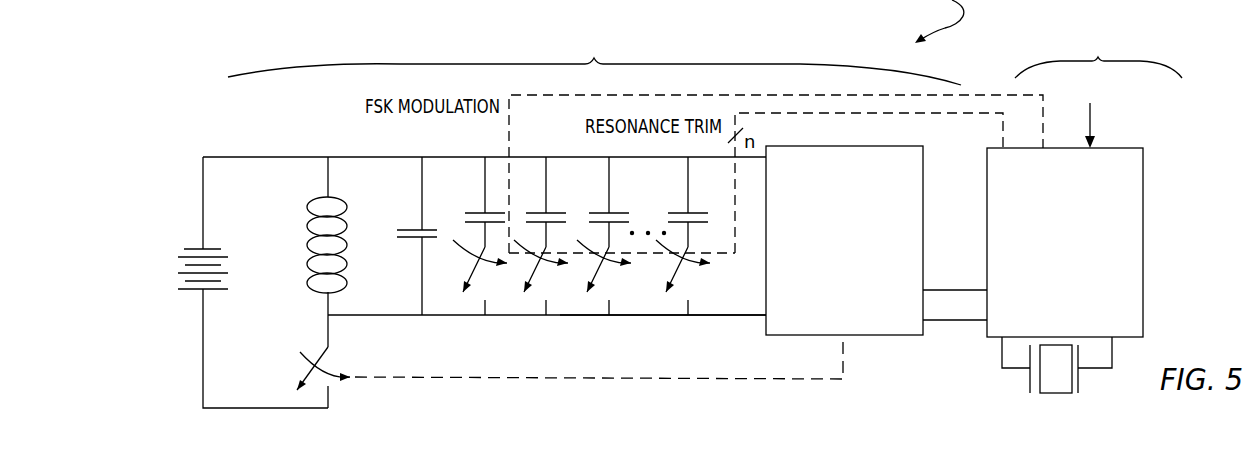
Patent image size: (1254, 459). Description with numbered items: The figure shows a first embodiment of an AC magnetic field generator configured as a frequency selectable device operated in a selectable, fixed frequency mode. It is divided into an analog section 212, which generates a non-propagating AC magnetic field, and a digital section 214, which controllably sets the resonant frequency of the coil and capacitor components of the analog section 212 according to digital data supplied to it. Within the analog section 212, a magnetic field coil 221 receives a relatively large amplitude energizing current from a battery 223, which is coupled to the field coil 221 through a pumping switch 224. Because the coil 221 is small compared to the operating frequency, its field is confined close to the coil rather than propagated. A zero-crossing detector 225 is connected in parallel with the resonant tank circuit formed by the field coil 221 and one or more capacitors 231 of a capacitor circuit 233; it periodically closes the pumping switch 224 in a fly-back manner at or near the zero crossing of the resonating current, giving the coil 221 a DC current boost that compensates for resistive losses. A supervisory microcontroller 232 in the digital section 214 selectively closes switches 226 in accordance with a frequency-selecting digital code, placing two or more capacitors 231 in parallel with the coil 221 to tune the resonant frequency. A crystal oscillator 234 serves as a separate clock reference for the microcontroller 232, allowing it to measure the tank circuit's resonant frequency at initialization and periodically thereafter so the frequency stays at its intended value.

The analog section 212 is at (594, 55).
The digital section 214 is at (1098, 89).
The magnetic field coil 221 is at (337, 212).
The battery 223 is at (178, 275).
The pumping switch 224 is at (323, 378).
The zero-crossing detector 225 is at (873, 322).
The switches 226 is at (686, 285).
The capacitors 231 is at (413, 245).
The supervisory microcontroller 232 is at (1143, 262).
The capacitor circuit 233 is at (627, 300).
The crystal oscillator 234 is at (1053, 395).